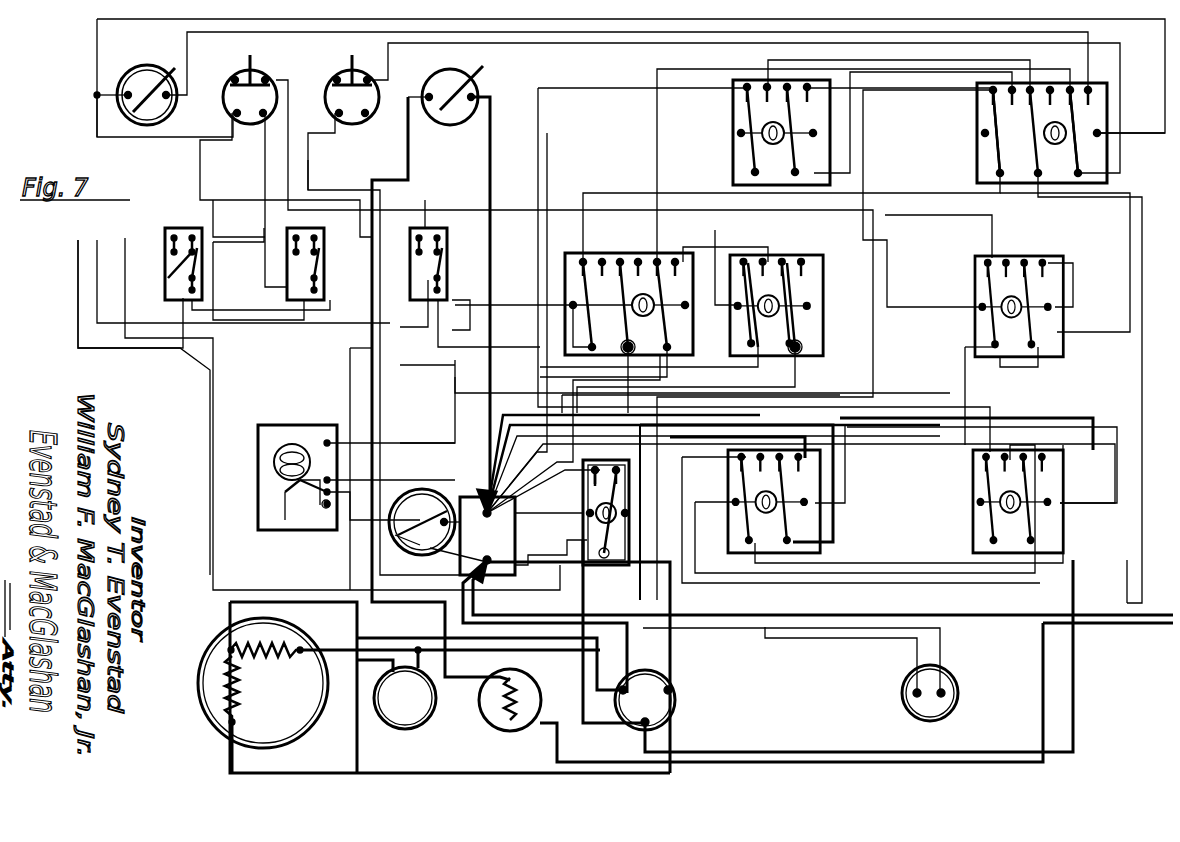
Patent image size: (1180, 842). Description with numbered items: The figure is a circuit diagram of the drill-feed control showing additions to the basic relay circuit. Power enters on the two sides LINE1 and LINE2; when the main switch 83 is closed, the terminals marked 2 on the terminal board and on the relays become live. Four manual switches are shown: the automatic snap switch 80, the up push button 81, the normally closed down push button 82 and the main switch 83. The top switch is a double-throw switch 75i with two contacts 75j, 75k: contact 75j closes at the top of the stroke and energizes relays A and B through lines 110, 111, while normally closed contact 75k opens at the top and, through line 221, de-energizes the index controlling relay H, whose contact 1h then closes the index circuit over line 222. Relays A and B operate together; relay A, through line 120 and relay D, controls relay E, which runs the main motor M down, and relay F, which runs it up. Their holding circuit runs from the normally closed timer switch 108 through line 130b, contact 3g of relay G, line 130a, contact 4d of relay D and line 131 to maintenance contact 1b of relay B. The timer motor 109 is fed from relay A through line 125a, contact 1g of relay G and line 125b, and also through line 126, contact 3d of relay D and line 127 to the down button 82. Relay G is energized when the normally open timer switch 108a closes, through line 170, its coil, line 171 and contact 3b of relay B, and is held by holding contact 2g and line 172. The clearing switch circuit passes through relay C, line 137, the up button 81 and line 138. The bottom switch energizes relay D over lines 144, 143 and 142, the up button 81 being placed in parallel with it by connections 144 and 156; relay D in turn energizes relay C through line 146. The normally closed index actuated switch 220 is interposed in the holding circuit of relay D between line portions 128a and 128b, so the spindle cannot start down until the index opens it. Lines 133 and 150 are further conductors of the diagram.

The automatic switch 80 is at (135, 85).
The up push button 81 is at (244, 78).
The down push button 82 is at (346, 79).
The main switch 83 is at (442, 86).
The line 142 is at (274, 21).
The conductor 150 is at (394, 32).
The line 127 is at (499, 42).
The line 120 is at (768, 63).
The timer motor line 125a is at (664, 66).
The conductor 133 is at (585, 98).
The line 130a is at (608, 192).
The line 126 is at (930, 72).
The line 131 is at (927, 92).
The line 146 is at (1126, 96).
The line 137 is at (310, 138).
The line 138 is at (196, 154).
The connection 156 is at (263, 174).
The line 128a is at (314, 178).
The line 143 is at (134, 136).
The line 170 is at (512, 305).
The line 171 is at (710, 238).
The line 172 is at (596, 280).
The line 144 is at (234, 238).
The line 110 is at (100, 282).
The line 111 is at (452, 326).
The line 221 is at (78, 250).
The line 222 is at (656, 483).
The top switch contact 75j is at (162, 248).
The double throw top switch 75i is at (160, 288).
The top switch contact 75k is at (194, 263).
The line 130b is at (448, 356).
The timer motor line 125b is at (452, 428).
The timer motor 109 is at (278, 428).
The normally open timer switch 108a is at (280, 496).
The normally closed timer switch 108 is at (274, 530).
The index actuated switch 220 is at (438, 525).
The line 128b is at (441, 526).
The contact of relay G 3g is at (578, 250).
The holding contact of relay G 2g is at (636, 260).
The contact of relay G 1g is at (655, 260).
The contact of relay B 3b is at (810, 276).
The maintenance contact of relay B 1b is at (752, 264).
The contact of relay D 4d is at (981, 104).
The contact of relay D 3d is at (1078, 102).
The contact of relay H 1h is at (588, 473).
The relay A is at (770, 132).
The relay B is at (690, 334).
The relay C is at (1010, 349).
The relay D is at (1028, 133).
The relay G is at (629, 292).
The index controlling relay H is at (597, 512).
The relay E is at (774, 501).
The relay F is at (1018, 501).
The terminal 2 is at (816, 453).
The motor and generator M is at (578, 656).
The line side 1 LINE1 is at (1102, 392).
The line side 2 LINE2 is at (856, 661).